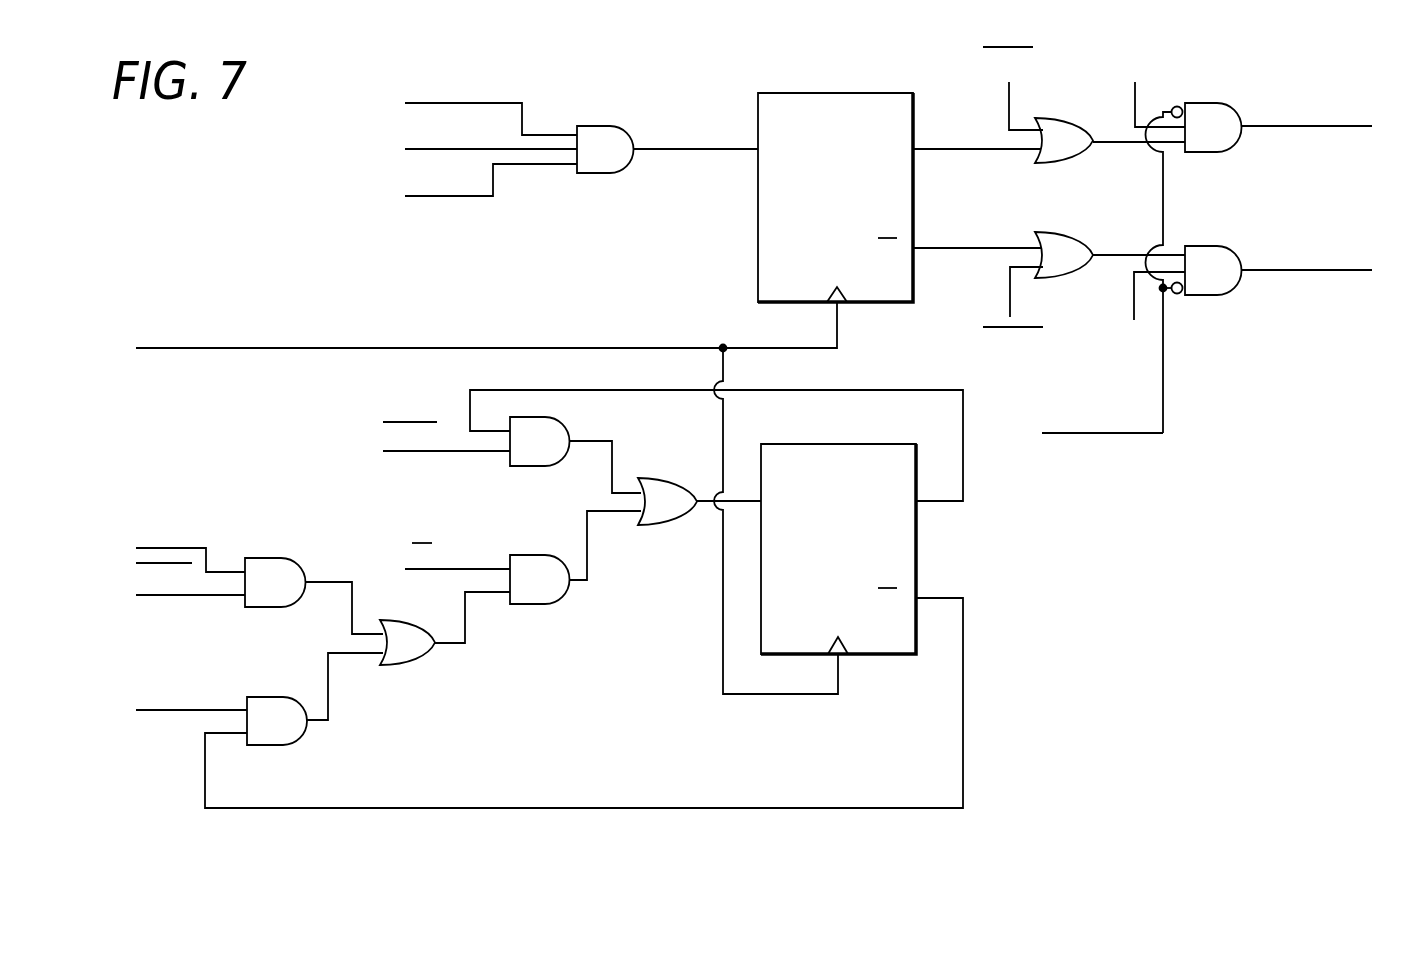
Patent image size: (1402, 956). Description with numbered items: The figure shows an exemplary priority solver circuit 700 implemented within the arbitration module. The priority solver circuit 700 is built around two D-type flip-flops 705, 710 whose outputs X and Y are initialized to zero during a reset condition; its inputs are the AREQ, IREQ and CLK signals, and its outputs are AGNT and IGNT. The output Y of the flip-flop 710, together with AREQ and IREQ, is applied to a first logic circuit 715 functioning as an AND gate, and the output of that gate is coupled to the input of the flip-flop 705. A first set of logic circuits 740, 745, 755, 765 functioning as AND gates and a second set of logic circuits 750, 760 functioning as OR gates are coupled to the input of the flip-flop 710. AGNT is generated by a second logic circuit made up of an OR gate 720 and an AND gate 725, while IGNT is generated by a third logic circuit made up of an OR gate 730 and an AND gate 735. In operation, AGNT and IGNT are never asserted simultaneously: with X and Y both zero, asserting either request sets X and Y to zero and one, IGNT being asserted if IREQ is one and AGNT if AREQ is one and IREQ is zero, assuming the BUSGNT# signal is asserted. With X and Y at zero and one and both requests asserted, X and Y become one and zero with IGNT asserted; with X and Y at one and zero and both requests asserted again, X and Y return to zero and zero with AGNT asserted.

The priority solver circuit 700 is at (754, 427).
The flip-flop 705 is at (832, 92).
The flip-flop 710 is at (835, 443).
The first logic circuit 715 is at (607, 167).
The OR gate 720 is at (1070, 152).
The AND gate 725 is at (1220, 138).
The OR gate 730 is at (1070, 266).
The AND gate 735 is at (1222, 282).
The logic circuit 740 is at (275, 597).
The logic circuit 745 is at (283, 735).
The logic circuit 750 is at (408, 653).
The logic circuit 755 is at (538, 598).
The logic circuit 760 is at (667, 514).
The logic circuit 765 is at (540, 460).